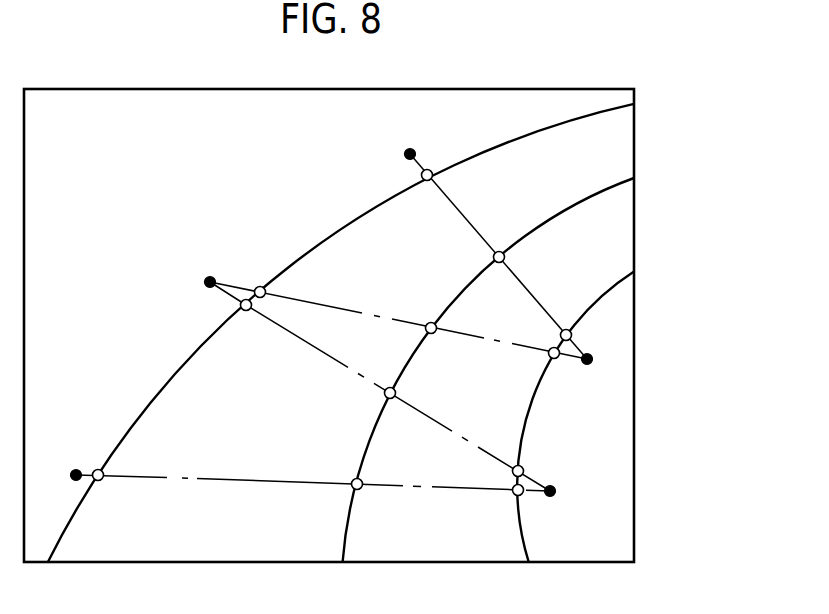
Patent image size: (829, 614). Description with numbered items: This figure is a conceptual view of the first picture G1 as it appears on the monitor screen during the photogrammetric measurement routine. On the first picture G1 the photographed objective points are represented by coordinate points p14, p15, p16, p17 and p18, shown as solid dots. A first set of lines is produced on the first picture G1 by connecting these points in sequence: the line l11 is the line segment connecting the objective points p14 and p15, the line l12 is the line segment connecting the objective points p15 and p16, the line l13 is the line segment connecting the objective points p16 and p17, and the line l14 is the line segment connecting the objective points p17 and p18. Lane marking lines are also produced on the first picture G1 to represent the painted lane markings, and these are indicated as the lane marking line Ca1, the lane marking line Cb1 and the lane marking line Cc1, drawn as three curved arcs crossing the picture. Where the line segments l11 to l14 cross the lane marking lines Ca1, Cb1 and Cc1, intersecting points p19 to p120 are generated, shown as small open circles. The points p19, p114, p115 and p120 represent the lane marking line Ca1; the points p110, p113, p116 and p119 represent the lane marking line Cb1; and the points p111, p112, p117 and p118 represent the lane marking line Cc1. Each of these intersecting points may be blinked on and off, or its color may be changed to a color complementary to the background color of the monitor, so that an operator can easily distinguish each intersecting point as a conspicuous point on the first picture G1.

The first picture G1 is at (636, 301).
The lane marking line Ca1 is at (196, 355).
The lane marking line Cb1 is at (364, 453).
The lane marking line Cc1 is at (518, 521).
The line l11 is at (468, 218).
The line l12 is at (517, 343).
The line l13 is at (337, 361).
The line l14 is at (168, 477).
The objective point p14 is at (404, 152).
The objective point p15 is at (589, 365).
The objective point p16 is at (204, 282).
The objective point p17 is at (556, 496).
The objective point p18 is at (84, 482).
The intersecting point p19 is at (421, 176).
The intersecting point p110 is at (493, 256).
The intersecting point p111 is at (566, 329).
The intersecting point p112 is at (548, 355).
The intersecting point p113 is at (428, 323).
The intersecting point p114 is at (260, 286).
The intersecting point p115 is at (246, 311).
The intersecting point p116 is at (388, 387).
The intersecting point p117 is at (524, 470).
The intersecting point p118 is at (512, 488).
The intersecting point p119 is at (352, 488).
The intersecting point p120 is at (96, 469).